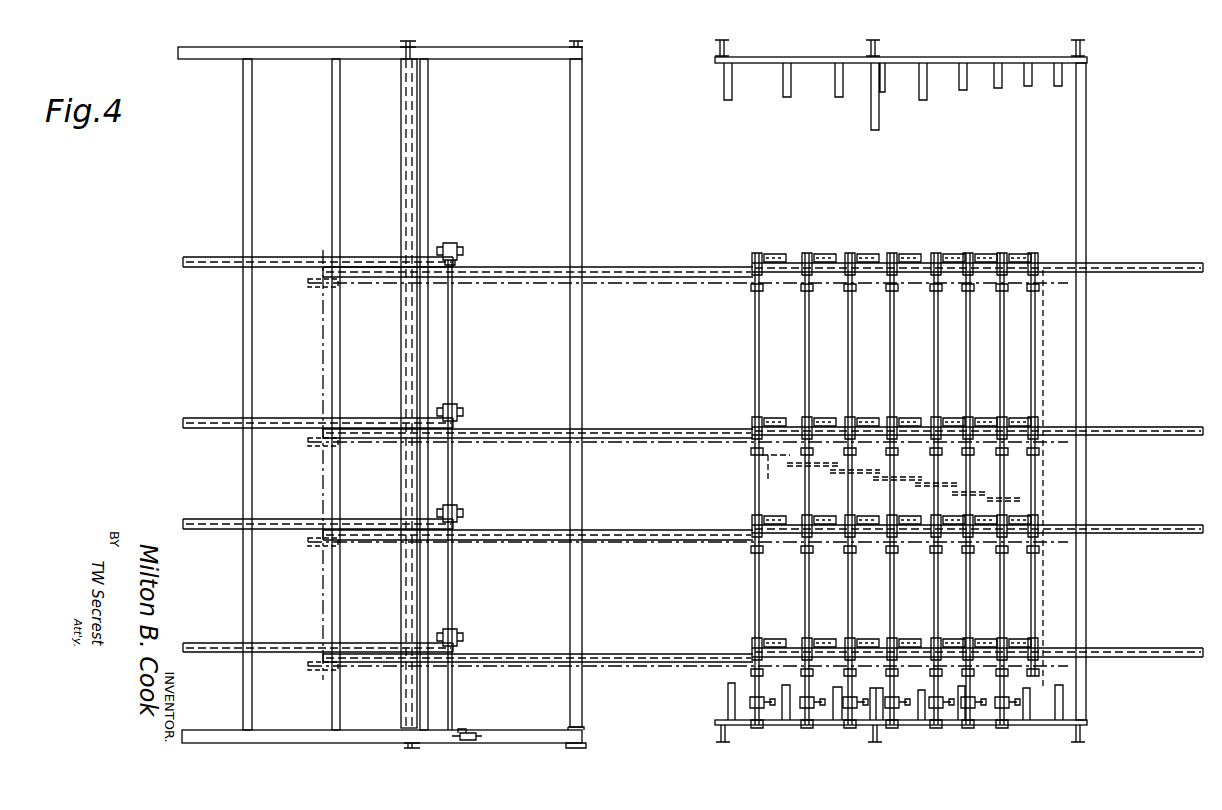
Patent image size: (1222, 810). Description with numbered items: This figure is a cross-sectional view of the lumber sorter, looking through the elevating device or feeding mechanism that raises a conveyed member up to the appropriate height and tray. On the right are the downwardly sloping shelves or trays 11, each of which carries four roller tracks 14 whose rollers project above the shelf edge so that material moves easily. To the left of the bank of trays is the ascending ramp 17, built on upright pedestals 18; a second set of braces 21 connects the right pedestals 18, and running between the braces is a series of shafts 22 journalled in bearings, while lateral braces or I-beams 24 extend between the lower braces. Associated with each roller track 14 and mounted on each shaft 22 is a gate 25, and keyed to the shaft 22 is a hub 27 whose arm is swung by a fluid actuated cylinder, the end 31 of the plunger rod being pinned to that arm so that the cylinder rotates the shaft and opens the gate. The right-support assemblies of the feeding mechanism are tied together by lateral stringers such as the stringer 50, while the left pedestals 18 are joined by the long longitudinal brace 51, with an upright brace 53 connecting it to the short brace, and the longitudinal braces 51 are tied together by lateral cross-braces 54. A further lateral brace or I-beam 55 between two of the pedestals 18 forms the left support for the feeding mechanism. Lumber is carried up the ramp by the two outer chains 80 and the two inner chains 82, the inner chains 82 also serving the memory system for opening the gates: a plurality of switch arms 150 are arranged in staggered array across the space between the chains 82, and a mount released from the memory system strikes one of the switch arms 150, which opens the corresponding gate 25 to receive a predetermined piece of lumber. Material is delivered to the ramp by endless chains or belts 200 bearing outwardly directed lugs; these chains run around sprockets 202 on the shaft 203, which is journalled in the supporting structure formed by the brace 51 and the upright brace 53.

The shelf or tray 11 is at (1125, 265).
The roller track 14 is at (1161, 266).
The ascending ramp 17 is at (786, 730).
The upright pedestal 18 is at (413, 50).
The second set of braces 21 is at (804, 59).
The shaft 22 is at (764, 351).
The lateral brace or I-beam 24 is at (729, 102).
The gate 25 is at (772, 254).
The hub 27 is at (742, 707).
The plunger rod end 31 is at (769, 699).
The lateral brace or stringer 50 is at (1082, 133).
The long longitudinal brace 51 is at (204, 55).
The upright brace 53 is at (477, 735).
The lateral cross-brace 54 is at (253, 134).
The lateral brace or I-beam 55 is at (407, 598).
The outer chain 80 is at (648, 265).
The inner chain 82 is at (652, 430).
The switch arm 150 is at (951, 470).
The endless chain or belt 200 is at (182, 269).
The sprocket 202 is at (463, 261).
The shaft 203 is at (454, 305).